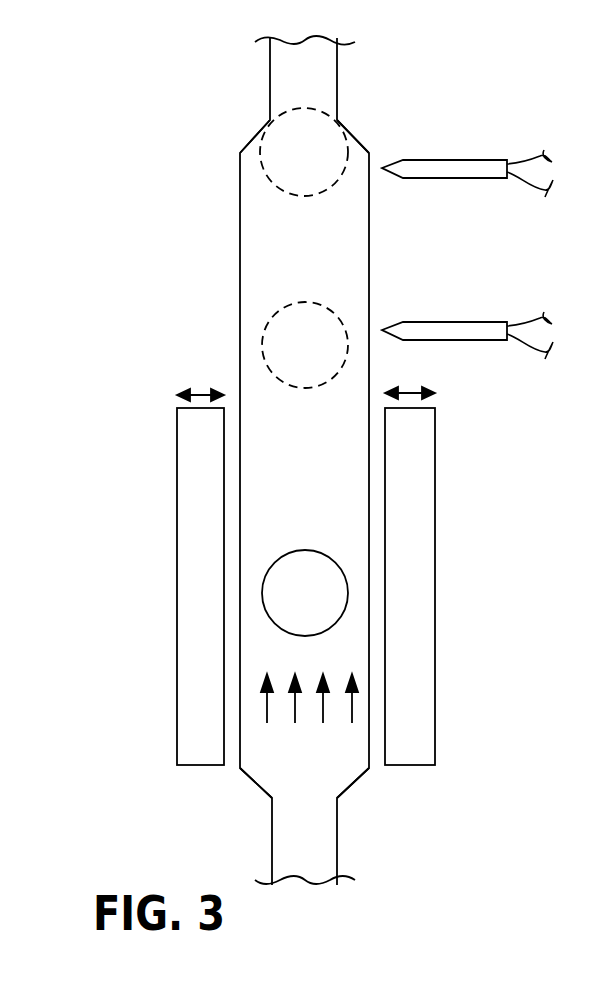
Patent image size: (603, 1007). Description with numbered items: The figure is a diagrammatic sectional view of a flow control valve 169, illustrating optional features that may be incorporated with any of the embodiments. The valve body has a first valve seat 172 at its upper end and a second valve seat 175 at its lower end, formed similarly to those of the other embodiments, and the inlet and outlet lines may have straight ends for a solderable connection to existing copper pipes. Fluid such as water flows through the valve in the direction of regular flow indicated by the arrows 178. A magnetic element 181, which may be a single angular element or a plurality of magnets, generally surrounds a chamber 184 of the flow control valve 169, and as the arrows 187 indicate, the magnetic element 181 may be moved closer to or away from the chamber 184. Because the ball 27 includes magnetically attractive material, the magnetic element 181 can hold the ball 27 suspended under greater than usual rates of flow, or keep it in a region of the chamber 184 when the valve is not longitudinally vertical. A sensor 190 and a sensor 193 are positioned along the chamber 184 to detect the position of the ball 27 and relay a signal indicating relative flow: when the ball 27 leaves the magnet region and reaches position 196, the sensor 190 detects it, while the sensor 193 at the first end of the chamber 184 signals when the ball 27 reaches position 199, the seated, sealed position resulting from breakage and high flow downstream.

The flow control valve 169 is at (157, 203).
The first valve seat 172 is at (338, 119).
The second valve seat 175 is at (337, 799).
The position of the ball 199 is at (262, 140).
The position of the ball 196 is at (277, 312).
The chamber 184 is at (283, 460).
The ball 27 is at (332, 587).
The arrows indicating direction of regular flow 178 is at (267, 712).
The magnetic element 181 is at (190, 532).
The arrows indicating movement of the magnetic element 187 is at (193, 390).
The sensor 193 is at (460, 163).
The sensor 190 is at (460, 322).